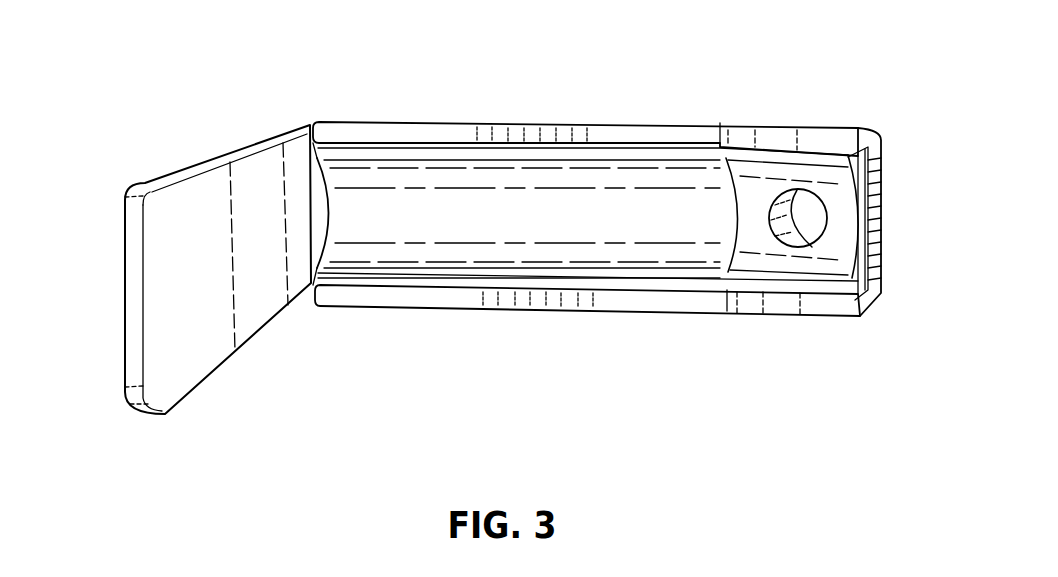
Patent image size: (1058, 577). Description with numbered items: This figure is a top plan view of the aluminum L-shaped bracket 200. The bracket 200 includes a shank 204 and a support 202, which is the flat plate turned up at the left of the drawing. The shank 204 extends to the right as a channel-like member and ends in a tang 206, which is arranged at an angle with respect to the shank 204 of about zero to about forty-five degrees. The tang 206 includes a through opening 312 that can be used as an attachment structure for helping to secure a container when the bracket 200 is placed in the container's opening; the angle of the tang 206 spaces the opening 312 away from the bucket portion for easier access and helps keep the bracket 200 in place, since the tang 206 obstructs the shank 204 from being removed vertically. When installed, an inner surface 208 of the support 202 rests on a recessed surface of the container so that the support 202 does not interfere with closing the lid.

The bracket 200 is at (425, 270).
The support 202 is at (157, 282).
The shank 204 is at (625, 300).
The tang 206 is at (780, 300).
The inner surface 208 is at (253, 205).
The through opening 312 is at (810, 222).